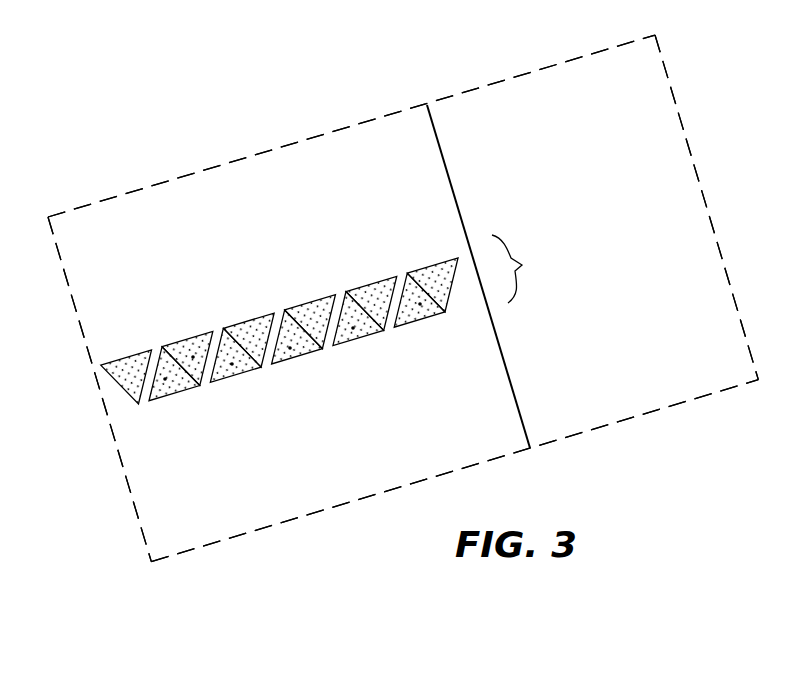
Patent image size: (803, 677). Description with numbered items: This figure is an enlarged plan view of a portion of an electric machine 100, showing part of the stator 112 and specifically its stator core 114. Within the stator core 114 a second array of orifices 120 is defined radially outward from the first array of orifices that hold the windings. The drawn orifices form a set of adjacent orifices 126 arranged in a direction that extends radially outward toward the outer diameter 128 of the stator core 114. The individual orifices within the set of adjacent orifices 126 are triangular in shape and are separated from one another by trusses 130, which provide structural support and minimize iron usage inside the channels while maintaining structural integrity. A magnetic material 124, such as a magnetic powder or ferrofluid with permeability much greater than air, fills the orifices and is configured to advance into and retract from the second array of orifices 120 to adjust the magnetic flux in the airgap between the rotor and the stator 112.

The electric machine 100 is at (170, 95).
The stator 112 is at (463, 205).
The stator core 114 is at (258, 196).
The second array of orifices 120 is at (372, 302).
The magnetic material 124 is at (420, 304).
The set of adjacent orifices 126 is at (527, 269).
The outer diameter 128 is at (520, 406).
The trusses 130 is at (208, 338).